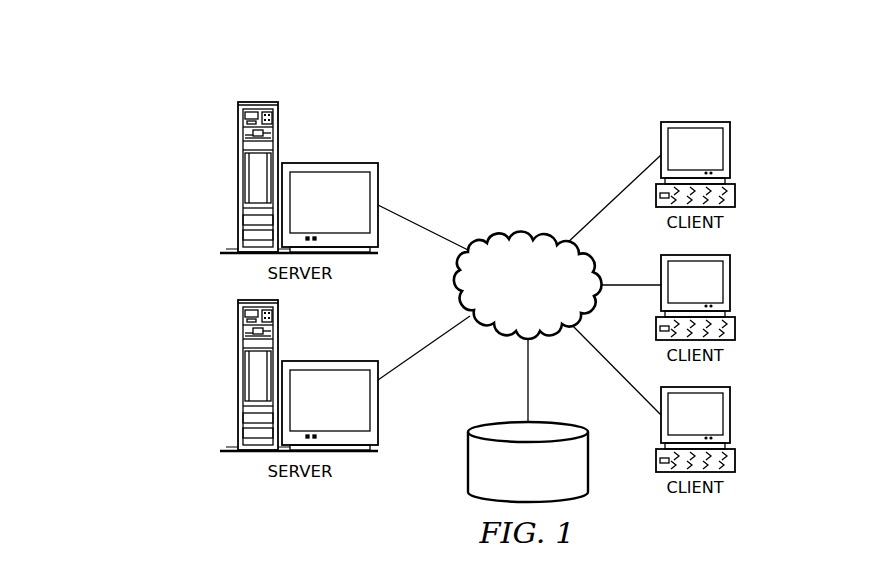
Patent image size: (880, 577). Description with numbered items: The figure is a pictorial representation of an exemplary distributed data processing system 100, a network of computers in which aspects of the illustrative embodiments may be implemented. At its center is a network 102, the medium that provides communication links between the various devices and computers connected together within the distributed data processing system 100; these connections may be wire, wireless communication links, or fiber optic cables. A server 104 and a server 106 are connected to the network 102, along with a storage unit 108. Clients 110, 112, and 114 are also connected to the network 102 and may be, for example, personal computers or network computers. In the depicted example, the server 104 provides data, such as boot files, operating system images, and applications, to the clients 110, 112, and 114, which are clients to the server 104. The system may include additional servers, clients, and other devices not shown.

The distributed data processing system 100 is at (579, 109).
The network 102 is at (502, 238).
The server 104 is at (238, 177).
The server 106 is at (238, 376).
The storage unit 108 is at (468, 461).
The client 110 is at (730, 151).
The client 112 is at (730, 287).
The client 114 is at (730, 417).